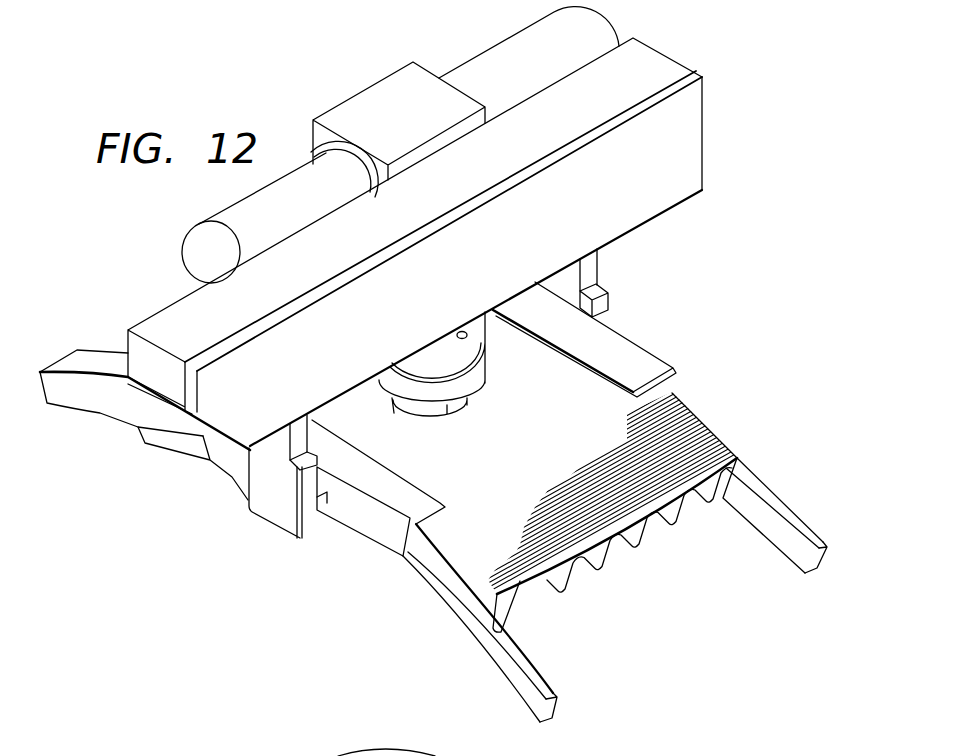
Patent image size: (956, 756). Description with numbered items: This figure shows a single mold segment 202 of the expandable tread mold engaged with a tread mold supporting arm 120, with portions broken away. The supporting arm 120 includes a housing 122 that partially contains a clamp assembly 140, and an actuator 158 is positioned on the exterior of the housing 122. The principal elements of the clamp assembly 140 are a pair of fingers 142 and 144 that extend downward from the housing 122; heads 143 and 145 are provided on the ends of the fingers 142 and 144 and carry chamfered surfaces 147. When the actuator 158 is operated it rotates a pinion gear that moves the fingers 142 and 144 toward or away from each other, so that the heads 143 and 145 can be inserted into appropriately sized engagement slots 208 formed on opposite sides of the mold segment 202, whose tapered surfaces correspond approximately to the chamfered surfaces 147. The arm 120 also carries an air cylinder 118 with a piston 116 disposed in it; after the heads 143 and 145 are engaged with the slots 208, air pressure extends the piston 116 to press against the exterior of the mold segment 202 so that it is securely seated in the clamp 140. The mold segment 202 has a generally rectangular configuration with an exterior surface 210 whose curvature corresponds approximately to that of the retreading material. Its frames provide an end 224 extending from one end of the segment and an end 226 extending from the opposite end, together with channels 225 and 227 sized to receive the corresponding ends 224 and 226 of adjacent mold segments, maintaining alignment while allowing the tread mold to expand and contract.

The piston 116 is at (447, 418).
The air cylinder 118 is at (488, 330).
The tread mold supporting arm 120 is at (152, 290).
The housing 122 is at (656, 54).
The clamp assembly 140 is at (266, 516).
The finger 142 is at (304, 436).
The head 143 is at (313, 536).
The finger 144 is at (601, 262).
The head 145 is at (607, 300).
The chamfered surfaces 147 is at (322, 498).
The actuator 158 is at (366, 82).
The mold segment 202 is at (700, 398).
The engagement slot 208 is at (331, 542).
The exterior surface 210 is at (716, 442).
The end 224 is at (68, 357).
The channel 225 is at (470, 603).
The end 226 is at (558, 716).
The channel 227 is at (176, 450).